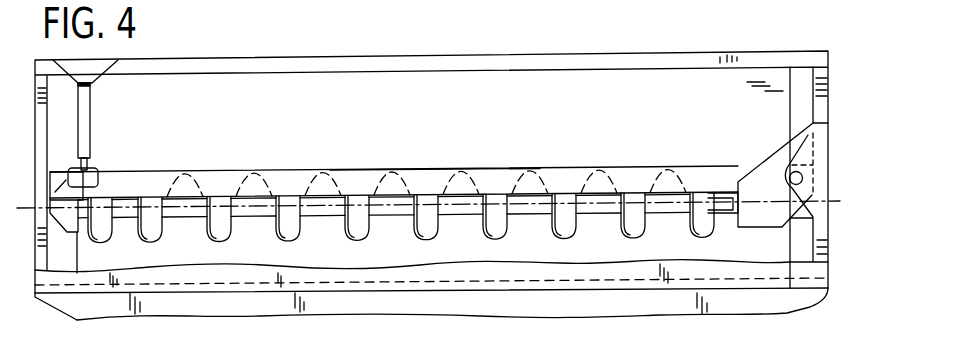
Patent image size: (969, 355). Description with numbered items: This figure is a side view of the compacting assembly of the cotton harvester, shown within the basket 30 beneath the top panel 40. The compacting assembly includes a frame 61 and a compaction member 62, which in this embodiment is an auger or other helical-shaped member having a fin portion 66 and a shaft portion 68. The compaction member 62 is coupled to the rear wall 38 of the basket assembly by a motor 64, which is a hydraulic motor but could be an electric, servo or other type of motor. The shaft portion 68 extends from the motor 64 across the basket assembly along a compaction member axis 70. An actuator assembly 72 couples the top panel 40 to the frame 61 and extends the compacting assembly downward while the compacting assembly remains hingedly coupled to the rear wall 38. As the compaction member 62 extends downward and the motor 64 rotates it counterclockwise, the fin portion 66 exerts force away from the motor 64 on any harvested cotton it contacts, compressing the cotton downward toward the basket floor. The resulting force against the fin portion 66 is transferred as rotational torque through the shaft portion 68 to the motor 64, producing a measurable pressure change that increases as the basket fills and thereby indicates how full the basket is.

The conveyor housing 30 is at (829, 58).
The rear wall 38 is at (829, 113).
The top panel 40 is at (540, 61).
The frame 61 is at (436, 177).
The compaction member 62 is at (428, 193).
The motor 64 is at (764, 219).
The fin portion 66 is at (520, 170).
The shaft portion 68 is at (581, 196).
The compaction member axis 70 is at (224, 170).
The actuator assembly 72 is at (91, 148).